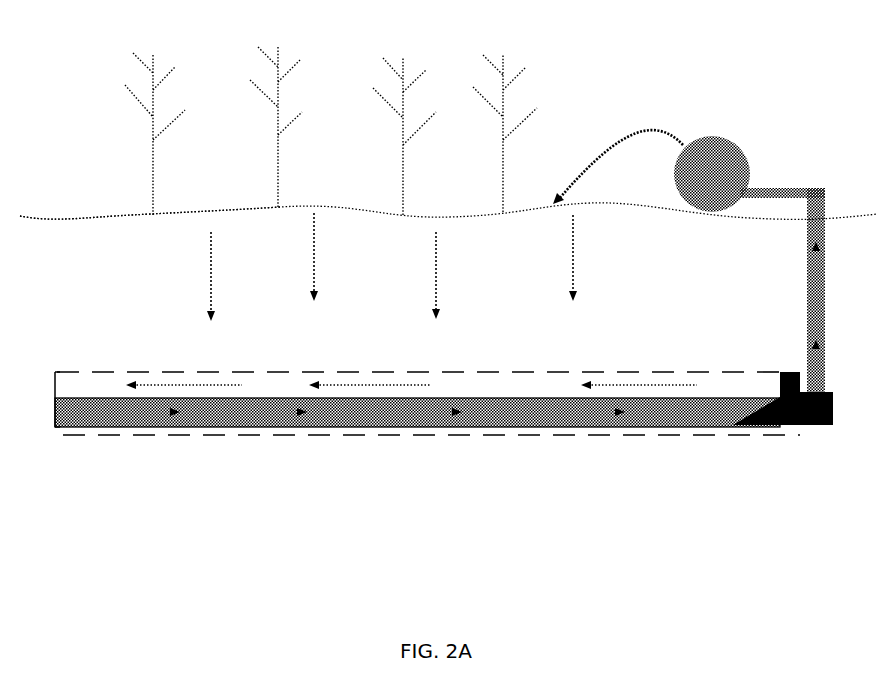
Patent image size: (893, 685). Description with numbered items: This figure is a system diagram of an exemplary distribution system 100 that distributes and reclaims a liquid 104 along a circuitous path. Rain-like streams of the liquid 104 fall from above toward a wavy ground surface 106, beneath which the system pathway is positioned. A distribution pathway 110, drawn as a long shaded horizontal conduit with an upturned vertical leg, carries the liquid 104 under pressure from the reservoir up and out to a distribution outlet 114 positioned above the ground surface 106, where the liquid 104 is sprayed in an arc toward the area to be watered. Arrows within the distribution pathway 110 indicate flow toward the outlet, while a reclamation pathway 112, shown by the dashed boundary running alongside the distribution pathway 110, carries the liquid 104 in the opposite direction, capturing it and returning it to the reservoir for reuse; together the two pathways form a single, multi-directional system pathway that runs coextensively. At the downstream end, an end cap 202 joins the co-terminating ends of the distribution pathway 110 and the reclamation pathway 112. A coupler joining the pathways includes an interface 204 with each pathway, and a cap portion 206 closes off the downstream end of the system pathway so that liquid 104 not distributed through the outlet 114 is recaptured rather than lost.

The distribution system 100 is at (773, 72).
The liquid 104 is at (621, 137).
The ground surface 106 is at (300, 210).
The distribution pathway 110 is at (490, 397).
The reclamation pathway 112 is at (267, 372).
The distribution outlet 114 is at (683, 145).
The end cap 202 is at (827, 433).
The interface 204 is at (752, 428).
The cap portion 206 is at (788, 373).